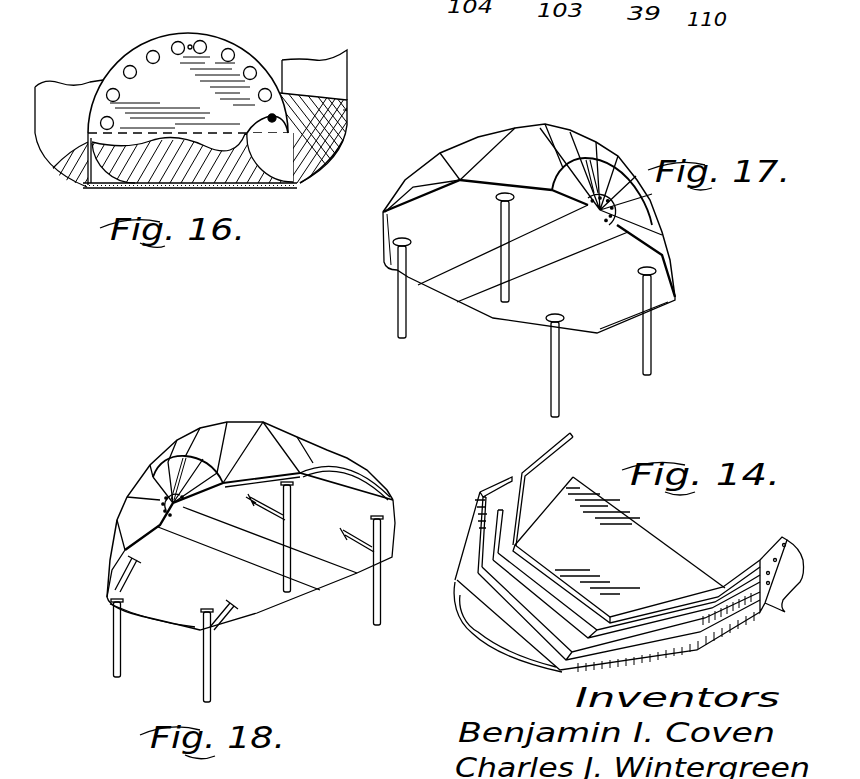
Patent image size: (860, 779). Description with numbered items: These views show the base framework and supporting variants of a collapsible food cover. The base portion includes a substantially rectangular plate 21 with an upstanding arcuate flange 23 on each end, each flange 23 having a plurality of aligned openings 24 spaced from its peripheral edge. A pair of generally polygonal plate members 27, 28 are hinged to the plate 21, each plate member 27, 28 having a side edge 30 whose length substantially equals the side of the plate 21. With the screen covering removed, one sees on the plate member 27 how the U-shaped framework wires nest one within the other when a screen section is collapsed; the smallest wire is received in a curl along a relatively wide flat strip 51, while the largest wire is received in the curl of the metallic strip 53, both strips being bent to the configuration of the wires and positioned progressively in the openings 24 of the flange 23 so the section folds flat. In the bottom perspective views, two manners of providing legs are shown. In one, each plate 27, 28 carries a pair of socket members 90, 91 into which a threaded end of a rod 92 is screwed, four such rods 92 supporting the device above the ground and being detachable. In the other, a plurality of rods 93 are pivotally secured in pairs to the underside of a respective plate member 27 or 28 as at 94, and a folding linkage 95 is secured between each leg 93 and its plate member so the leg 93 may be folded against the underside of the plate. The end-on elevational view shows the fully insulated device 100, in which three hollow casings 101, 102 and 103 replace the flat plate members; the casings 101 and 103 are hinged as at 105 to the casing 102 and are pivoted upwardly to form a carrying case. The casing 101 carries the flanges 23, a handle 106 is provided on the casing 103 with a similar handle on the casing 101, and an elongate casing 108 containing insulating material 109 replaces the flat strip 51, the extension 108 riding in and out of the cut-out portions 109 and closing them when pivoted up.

In FIG. 17, the rectangular plate 21 is at (580, 236).
In FIG. 16, the arcuate flange 23 is at (217, 43).
In FIG. 17, the arcuate flange 23 is at (604, 222).
In FIG. 18, the arcuate flange 23 is at (123, 513).
In FIG. 14, the arcuate flange 23 is at (802, 528).
In FIG. 16, the openings 24 is at (252, 68).
In FIG. 14, the openings 24 is at (776, 582).
In FIG. 17, the plate member 27 is at (470, 230).
In FIG. 18, the plate member 27 is at (200, 595).
In FIG. 14, the plate member 27 is at (616, 566).
In FIG. 17, the plate member 28 is at (576, 302).
In FIG. 18, the plate member 28 is at (336, 545).
In FIG. 14, the side edge 30 is at (673, 545).
In FIG. 14, the flat strip 51 is at (647, 653).
In FIG. 14, the metallic strip 53 is at (670, 607).
In FIG. 17, the socket member 90 is at (393, 242).
In FIG. 17, the socket member 91 is at (482, 178).
In FIG. 17, the rod 92 is at (490, 300).
In FIG. 18, the rod 93 is at (292, 528).
In FIG. 18, the pivotal securement 94 is at (290, 460).
In FIG. 18, the folding linkage 95 is at (250, 512).
In FIG. 16, the insulated device 100 is at (359, 62).
In FIG. 16, the hollow casing 101 is at (52, 93).
In FIG. 16, the hollow casing 102 is at (243, 207).
In FIG. 16, the hollow casing 103 is at (348, 110).
In FIG. 16, the hinge 105 is at (70, 187).
In FIG. 17, the handle 106 is at (688, 318).
In FIG. 16, the elongate casing 108 is at (355, 165).
In FIG. 16, the insulating material 109 is at (293, 190).